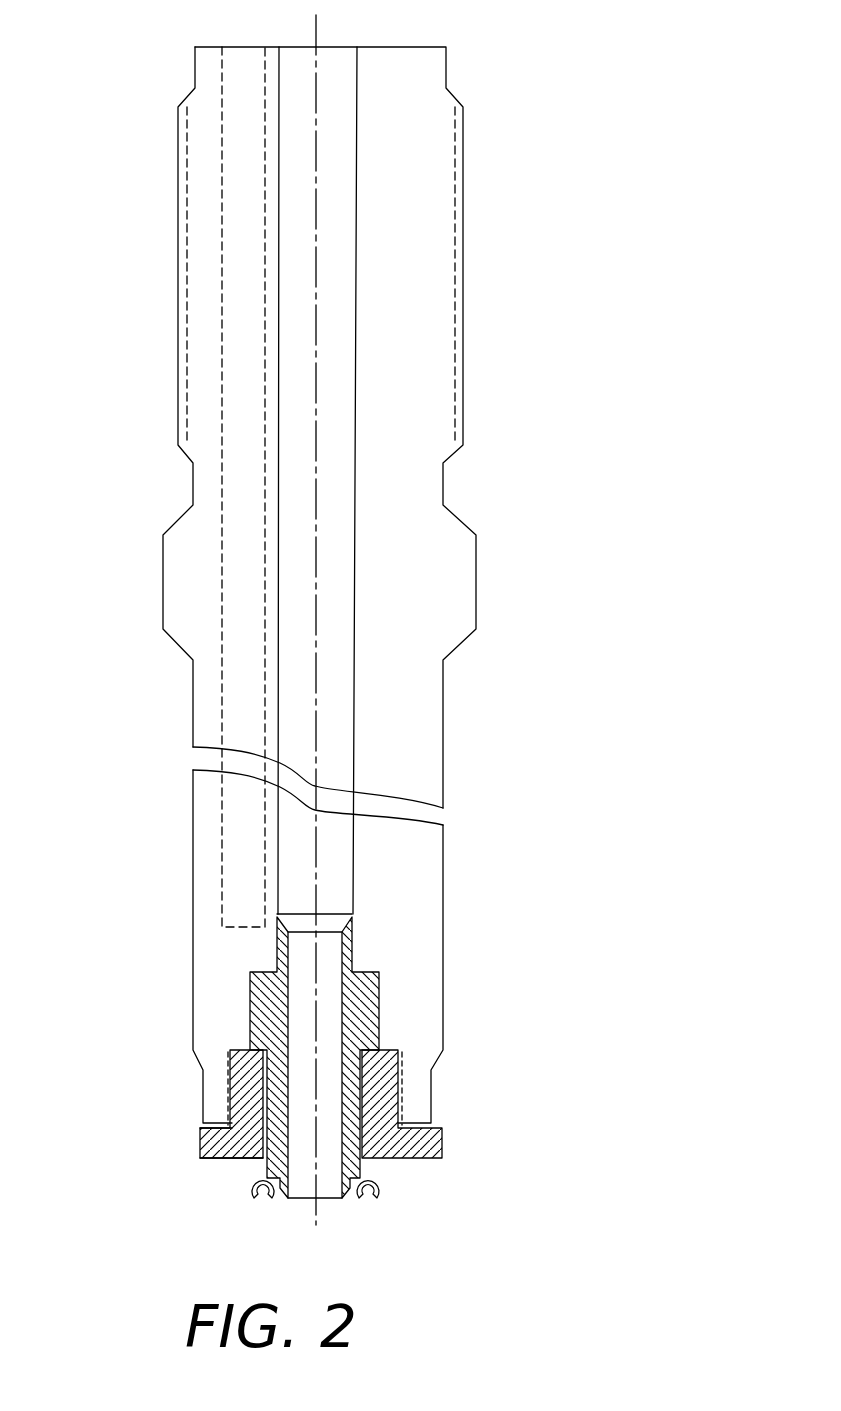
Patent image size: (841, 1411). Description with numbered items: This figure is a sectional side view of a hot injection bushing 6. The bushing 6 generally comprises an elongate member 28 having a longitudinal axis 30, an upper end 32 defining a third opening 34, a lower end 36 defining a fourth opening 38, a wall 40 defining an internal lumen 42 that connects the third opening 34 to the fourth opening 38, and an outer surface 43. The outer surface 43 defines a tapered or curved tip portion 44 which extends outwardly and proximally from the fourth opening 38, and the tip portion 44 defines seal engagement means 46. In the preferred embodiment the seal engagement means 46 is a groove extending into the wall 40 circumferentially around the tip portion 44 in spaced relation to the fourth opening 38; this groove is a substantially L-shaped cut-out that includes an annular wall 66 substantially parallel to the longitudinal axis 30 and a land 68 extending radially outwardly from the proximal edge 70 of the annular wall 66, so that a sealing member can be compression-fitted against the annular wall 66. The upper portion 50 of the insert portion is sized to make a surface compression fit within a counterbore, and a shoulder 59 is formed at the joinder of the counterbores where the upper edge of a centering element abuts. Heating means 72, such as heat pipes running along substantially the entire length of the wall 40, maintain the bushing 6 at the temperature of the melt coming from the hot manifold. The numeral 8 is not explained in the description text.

The bushing 6 is at (165, 692).
The snap ring 8 is at (385, 1196).
The elongate member 28 is at (420, 580).
The longitudinal axis 30 is at (316, 303).
The upper end 32 is at (405, 47).
The third opening 34 is at (332, 47).
The lower end 36 is at (345, 1200).
The fourth opening 38 is at (297, 1205).
The wall 40 is at (443, 710).
The internal lumen 42 is at (337, 723).
The outer surface 43 is at (443, 869).
The tip portion 44 is at (282, 1202).
The seal engagement means 46 is at (245, 1192).
The upper portion of insert portion 50 is at (372, 997).
The shoulder 59 is at (245, 1058).
The annular wall 66 is at (343, 1190).
The land 68 is at (268, 1178).
The proximal edge 70 is at (358, 1172).
The heating means 72 is at (245, 596).